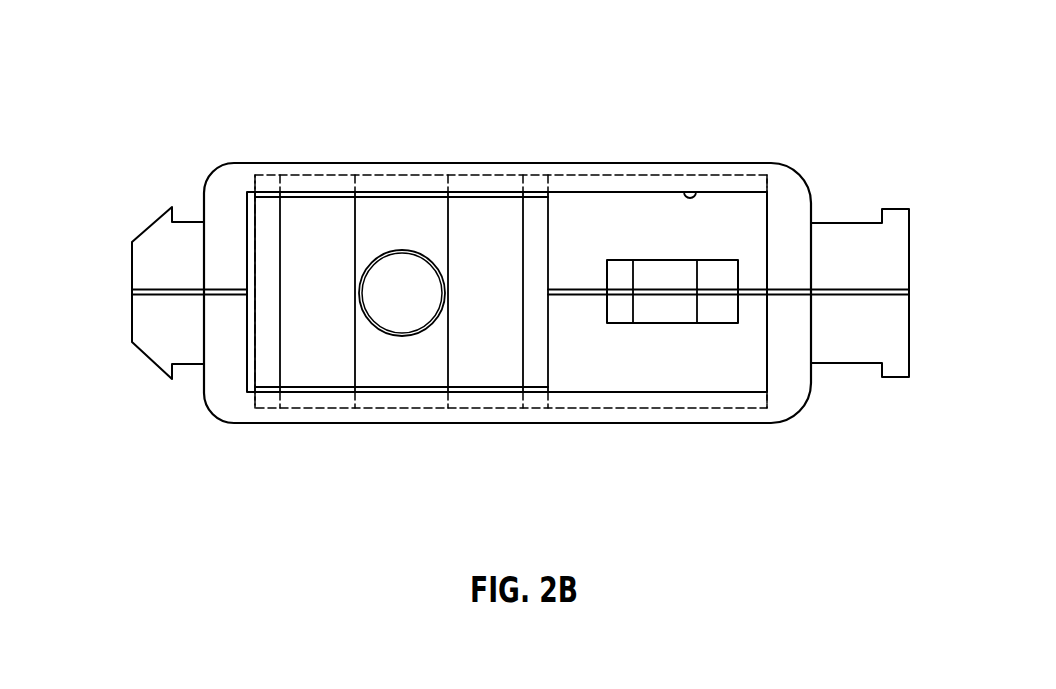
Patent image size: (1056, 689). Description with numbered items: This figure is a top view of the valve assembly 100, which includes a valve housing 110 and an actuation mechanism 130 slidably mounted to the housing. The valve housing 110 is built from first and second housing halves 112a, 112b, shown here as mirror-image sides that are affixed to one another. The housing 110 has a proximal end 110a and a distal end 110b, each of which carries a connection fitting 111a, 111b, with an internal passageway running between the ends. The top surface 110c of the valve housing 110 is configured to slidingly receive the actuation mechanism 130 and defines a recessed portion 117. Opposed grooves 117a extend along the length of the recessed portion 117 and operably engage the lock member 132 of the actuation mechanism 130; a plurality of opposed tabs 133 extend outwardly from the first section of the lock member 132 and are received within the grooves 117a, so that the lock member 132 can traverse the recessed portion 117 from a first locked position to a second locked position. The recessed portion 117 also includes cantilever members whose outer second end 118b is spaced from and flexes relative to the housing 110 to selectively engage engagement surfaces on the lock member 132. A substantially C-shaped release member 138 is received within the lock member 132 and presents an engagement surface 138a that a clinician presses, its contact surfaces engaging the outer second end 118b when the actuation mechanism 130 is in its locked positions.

The valve assembly 100 is at (760, 46).
The valve housing 110 is at (683, 430).
The proximal end 110a is at (127, 307).
The distal end 110b is at (912, 393).
The top surface 110c is at (397, 410).
The connection fitting 111a is at (152, 222).
The connection fitting 111b is at (900, 209).
The first housing half 112a is at (507, 162).
The second housing half 112b is at (350, 418).
The recessed portion 117 is at (693, 190).
The grooves 117a is at (326, 406).
The outer second end 118b is at (670, 273).
The actuation mechanism 130 is at (407, 180).
The lock member 132 is at (297, 370).
The tabs 133 is at (264, 181).
The release member 138 is at (383, 238).
The engagement surface 138a is at (413, 282).